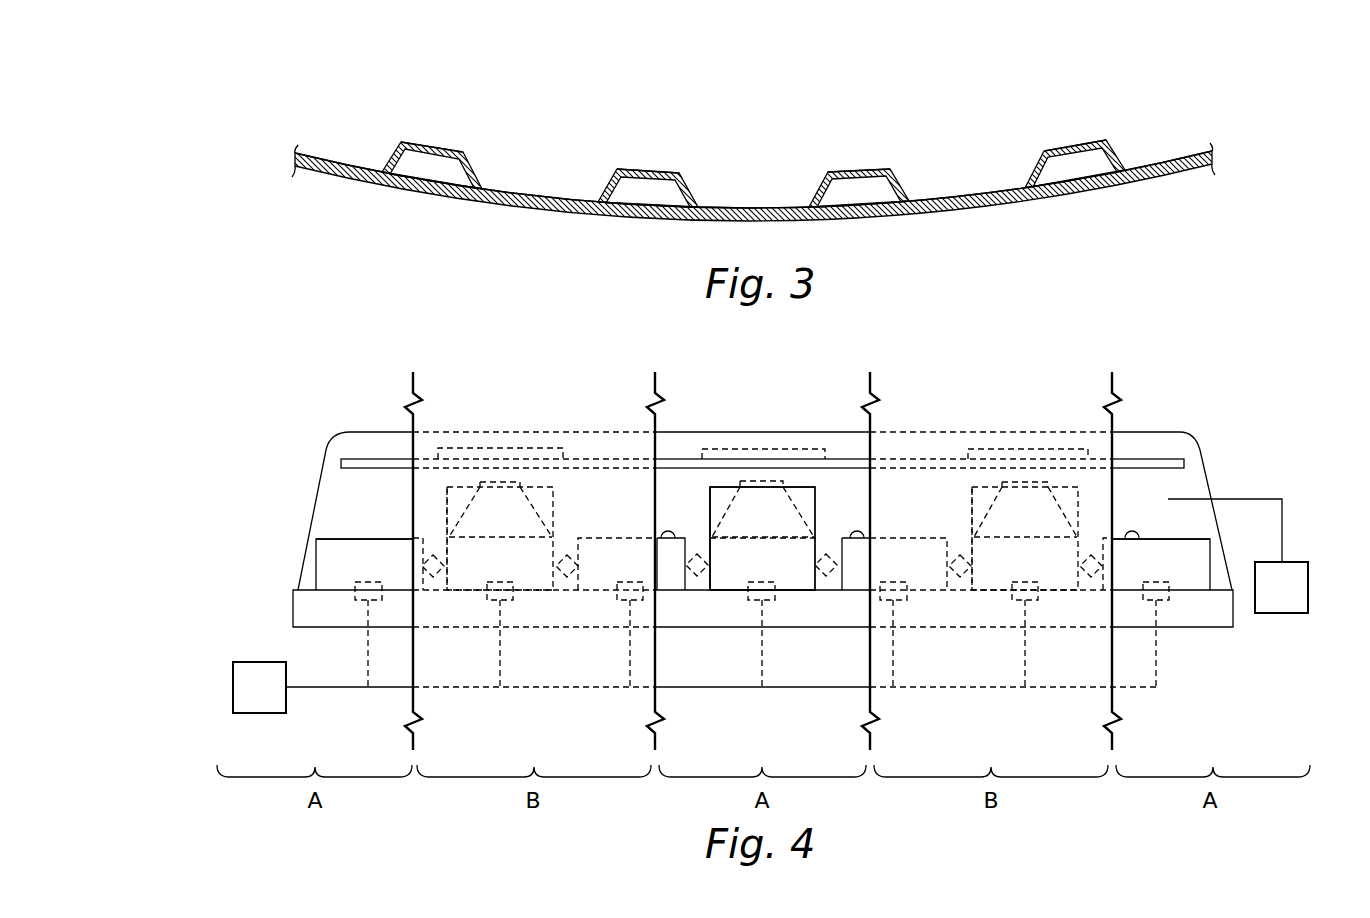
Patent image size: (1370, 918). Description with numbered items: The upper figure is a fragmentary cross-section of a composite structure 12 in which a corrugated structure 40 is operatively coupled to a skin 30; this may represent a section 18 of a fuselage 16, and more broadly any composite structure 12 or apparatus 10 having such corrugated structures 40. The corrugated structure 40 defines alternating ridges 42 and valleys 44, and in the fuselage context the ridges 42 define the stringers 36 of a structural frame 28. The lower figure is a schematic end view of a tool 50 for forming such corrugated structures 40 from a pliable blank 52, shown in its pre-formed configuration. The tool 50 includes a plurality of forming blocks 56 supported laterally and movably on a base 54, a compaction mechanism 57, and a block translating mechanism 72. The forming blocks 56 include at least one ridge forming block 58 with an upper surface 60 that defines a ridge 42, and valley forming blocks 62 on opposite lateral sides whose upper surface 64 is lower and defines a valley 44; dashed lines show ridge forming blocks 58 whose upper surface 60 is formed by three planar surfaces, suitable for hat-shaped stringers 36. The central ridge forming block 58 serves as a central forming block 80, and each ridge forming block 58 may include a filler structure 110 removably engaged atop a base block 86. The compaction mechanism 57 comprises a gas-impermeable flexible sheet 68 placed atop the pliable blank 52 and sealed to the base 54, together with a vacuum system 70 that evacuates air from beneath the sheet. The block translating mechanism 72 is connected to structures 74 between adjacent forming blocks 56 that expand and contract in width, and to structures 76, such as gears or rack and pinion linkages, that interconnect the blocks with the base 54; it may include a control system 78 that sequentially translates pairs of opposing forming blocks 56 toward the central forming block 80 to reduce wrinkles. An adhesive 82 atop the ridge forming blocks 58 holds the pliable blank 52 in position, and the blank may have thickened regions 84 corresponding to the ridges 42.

In FIG. 3, the apparatus 10 is at (1185, 62).
In FIG. 3, the composite structure 12 is at (1111, 78).
In FIG. 3, the fuselage 16 is at (1011, 70).
In FIG. 3, the section 18 is at (1040, 98).
In FIG. 3, the structural frame 28 is at (352, 93).
In FIG. 3, the skin 30 is at (998, 204).
In FIG. 3, the stringers 36 is at (428, 146).
In FIG. 3, the corrugated structure 40 is at (742, 156).
In FIG. 3, the ridges 42 is at (447, 150).
In FIG. 3, the valleys 44 is at (347, 164).
In FIG. 4, the tool 50 is at (1233, 380).
In FIG. 4, the pliable blank 52 is at (1158, 457).
In FIG. 4, the base 54 is at (1205, 627).
In FIG. 4, the forming blocks 56 is at (353, 512).
In FIG. 4, the compaction mechanism 57 is at (1278, 478).
In FIG. 4, the ridge forming block 58 is at (543, 481).
In FIG. 4, the upper surface 60 is at (457, 486).
In FIG. 4, the valley forming blocks 62 is at (334, 537).
In FIG. 4, the upper surface 64 is at (380, 538).
In FIG. 4, the gas-impermeable flexible sheet 68 is at (768, 430).
In FIG. 4, the vacuum system 70 is at (1309, 576).
In FIG. 4, the block translating mechanism 72 is at (227, 703).
In FIG. 4, the structures 74 is at (441, 560).
In FIG. 4, the structures 76 is at (368, 581).
In FIG. 4, the control system 78 is at (270, 700).
In FIG. 4, the central forming block 80 is at (750, 523).
In FIG. 4, the adhesive 82 is at (513, 480).
In FIG. 4, the thickened regions 84 is at (490, 447).
In FIG. 4, the base block 86 is at (473, 580).
In FIG. 4, the filler structure 110 is at (493, 505).